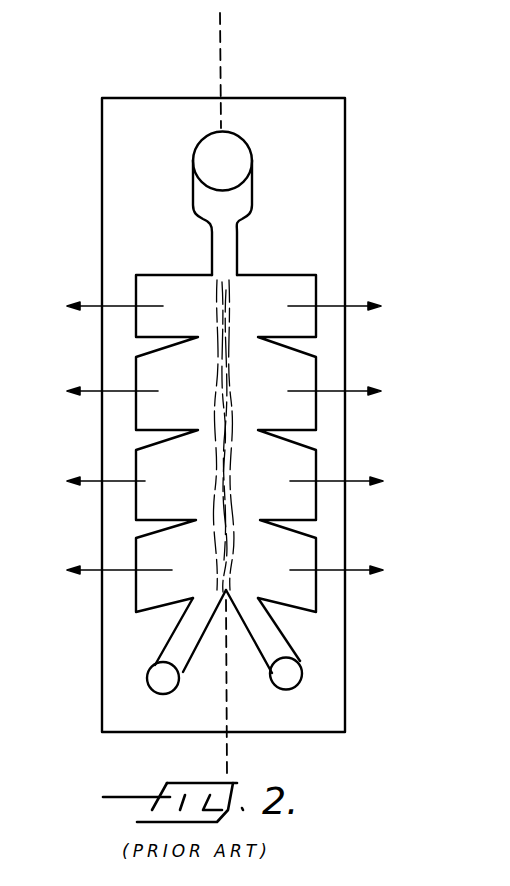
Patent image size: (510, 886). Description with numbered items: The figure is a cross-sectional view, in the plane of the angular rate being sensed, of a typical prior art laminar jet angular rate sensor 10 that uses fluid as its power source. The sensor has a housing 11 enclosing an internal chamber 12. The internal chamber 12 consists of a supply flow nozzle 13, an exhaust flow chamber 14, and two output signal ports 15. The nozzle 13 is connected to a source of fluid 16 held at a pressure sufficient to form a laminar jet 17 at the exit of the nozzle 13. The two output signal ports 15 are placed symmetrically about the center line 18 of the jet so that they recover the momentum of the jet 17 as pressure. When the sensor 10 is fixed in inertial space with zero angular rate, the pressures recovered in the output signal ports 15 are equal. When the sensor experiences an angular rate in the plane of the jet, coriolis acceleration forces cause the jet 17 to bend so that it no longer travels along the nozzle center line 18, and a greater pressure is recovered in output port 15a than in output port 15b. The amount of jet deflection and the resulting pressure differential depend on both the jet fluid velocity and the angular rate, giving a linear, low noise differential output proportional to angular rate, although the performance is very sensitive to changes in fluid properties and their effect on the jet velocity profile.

The laminar jet angular rate sensor 10 is at (347, 227).
The housing 11 is at (149, 163).
The internal chamber 12 is at (147, 499).
The supply flow nozzle 13 is at (238, 249).
The exhaust flow chamber 14 is at (248, 438).
The output signal ports 15 is at (259, 665).
The output port 15a is at (151, 693).
The output port 15b is at (293, 690).
The source of fluid 16 is at (239, 153).
The laminar jet 17 is at (229, 363).
The center line 18 is at (219, 44).